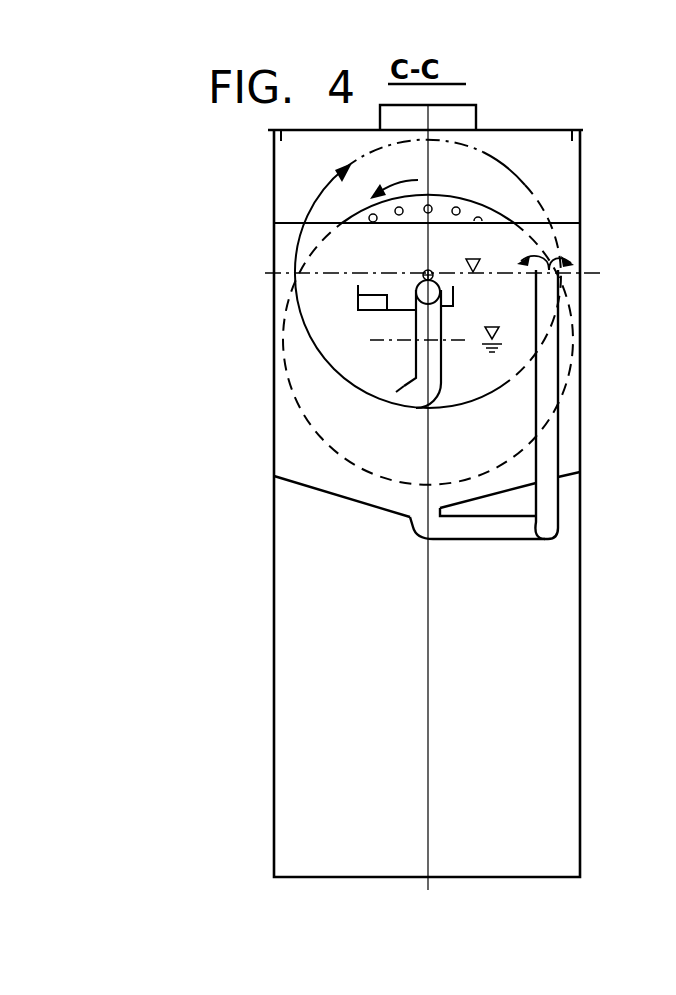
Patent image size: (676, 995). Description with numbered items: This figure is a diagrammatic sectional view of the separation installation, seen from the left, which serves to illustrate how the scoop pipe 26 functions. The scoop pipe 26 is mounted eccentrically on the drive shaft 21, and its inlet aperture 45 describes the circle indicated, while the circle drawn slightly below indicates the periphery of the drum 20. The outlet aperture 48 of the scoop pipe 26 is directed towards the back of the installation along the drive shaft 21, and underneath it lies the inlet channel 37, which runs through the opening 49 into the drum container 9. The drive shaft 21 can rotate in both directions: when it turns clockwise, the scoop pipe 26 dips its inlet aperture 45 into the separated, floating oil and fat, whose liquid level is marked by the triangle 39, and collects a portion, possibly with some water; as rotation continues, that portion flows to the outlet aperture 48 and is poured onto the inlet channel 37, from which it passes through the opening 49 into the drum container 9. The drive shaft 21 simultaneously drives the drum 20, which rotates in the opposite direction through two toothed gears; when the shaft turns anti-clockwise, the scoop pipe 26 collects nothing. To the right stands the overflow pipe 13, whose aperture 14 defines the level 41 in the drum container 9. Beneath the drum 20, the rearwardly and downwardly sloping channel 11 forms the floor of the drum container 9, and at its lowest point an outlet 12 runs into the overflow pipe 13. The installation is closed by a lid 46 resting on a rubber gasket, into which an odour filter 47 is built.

The drum container 9 is at (299, 195).
The channel 11 is at (313, 488).
The outlet 12 is at (413, 520).
The overflow pipe 13 is at (550, 441).
The aperture 14 is at (552, 258).
The drum 20 is at (473, 210).
The drive shaft 21 is at (424, 268).
The scoop pipe 26 is at (438, 353).
The inlet channel 37 is at (445, 311).
The triangle 39 is at (500, 332).
The level 41 is at (475, 259).
The inlet aperture 45 is at (404, 387).
The lid 46 is at (548, 128).
The odour filter 47 is at (468, 117).
The outlet aperture 48 is at (416, 280).
The opening 49 is at (358, 300).